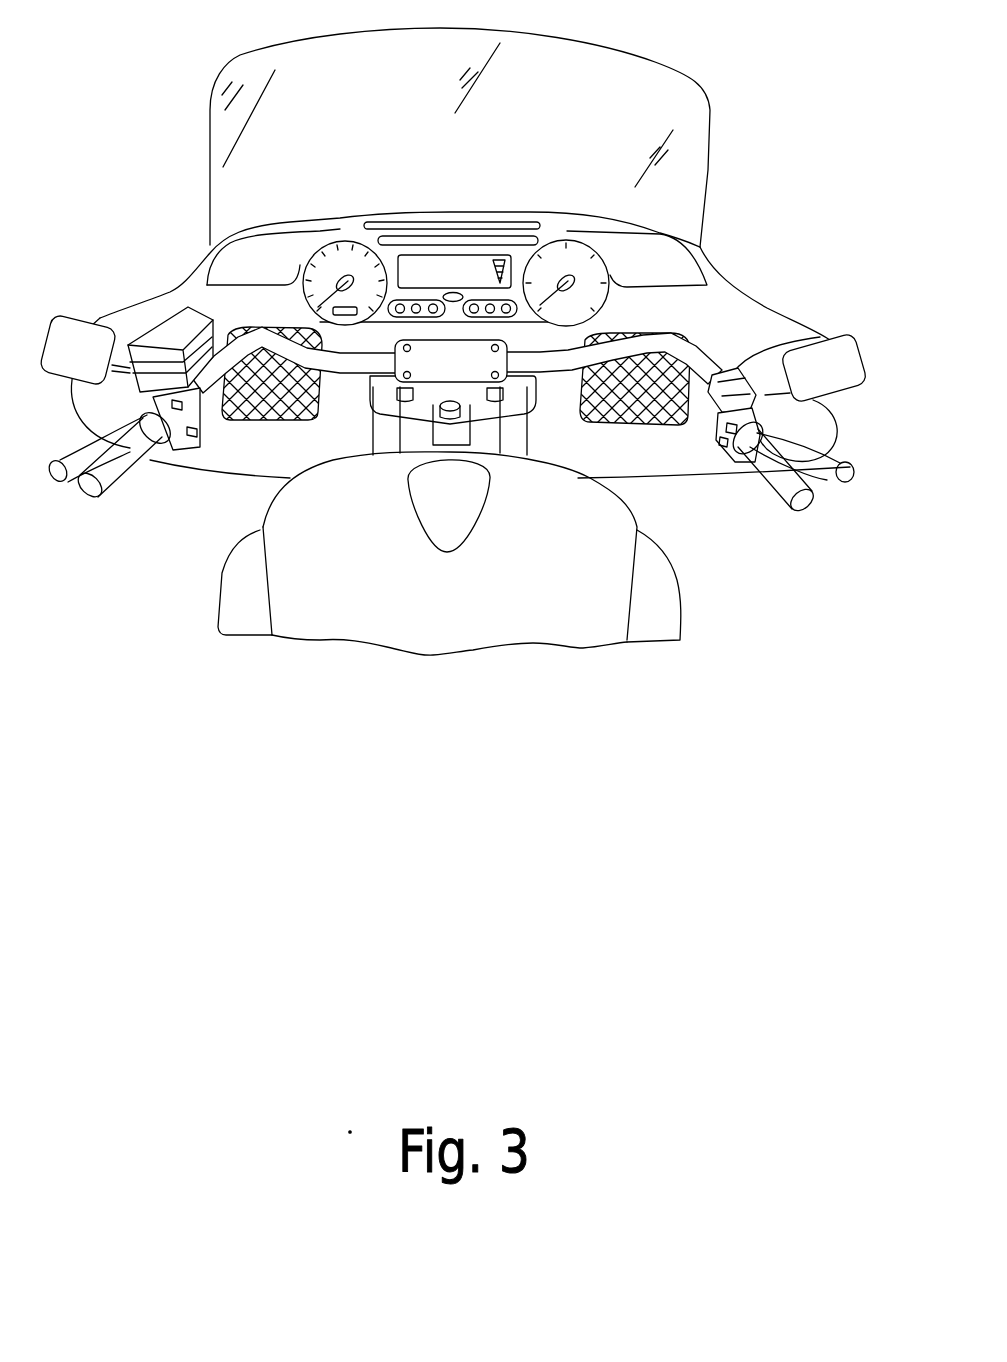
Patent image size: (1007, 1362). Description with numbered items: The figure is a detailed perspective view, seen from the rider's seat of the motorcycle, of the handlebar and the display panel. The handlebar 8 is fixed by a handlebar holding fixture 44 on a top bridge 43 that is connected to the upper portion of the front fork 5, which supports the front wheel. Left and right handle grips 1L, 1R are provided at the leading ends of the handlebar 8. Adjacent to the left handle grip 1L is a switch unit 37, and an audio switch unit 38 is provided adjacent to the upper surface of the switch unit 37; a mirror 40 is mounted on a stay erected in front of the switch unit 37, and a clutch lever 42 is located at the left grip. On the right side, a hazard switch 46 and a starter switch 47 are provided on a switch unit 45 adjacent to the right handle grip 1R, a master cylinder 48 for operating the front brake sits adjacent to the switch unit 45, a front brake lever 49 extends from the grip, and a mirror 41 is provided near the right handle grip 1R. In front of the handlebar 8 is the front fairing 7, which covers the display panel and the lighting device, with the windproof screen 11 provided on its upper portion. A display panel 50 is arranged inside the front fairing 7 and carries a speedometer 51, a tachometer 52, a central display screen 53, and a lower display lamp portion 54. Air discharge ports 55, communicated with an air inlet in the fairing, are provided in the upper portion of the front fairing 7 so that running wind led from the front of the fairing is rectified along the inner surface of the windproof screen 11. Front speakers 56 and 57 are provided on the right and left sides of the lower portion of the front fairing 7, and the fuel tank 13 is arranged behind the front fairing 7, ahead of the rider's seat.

The windproof screen 11 is at (682, 94).
The front fairing 7 is at (735, 300).
The fuel tank 13 is at (320, 627).
The front speaker 56 is at (257, 423).
The front speaker 57 is at (620, 413).
The handlebar 8 is at (552, 367).
The top bridge 43 is at (482, 413).
The front fork 5 is at (373, 428).
The handlebar holding fixture 44 is at (440, 370).
The display panel 50 is at (353, 228).
The speedometer 51 is at (303, 290).
The tachometer 52 is at (605, 300).
The central display screen 53 is at (418, 267).
The air discharge ports 55 is at (453, 222).
The lower display lamp portion 54 is at (423, 300).
The mirror 40 is at (72, 323).
The audio switch unit 38 is at (153, 340).
The switch unit 37 is at (187, 450).
The left handle grip 1L is at (127, 476).
The clutch lever 42 is at (60, 482).
The mirror 41 is at (866, 352).
The master cylinder 48 is at (813, 330).
The switch unit 45 is at (743, 477).
The starter switch 47 is at (717, 470).
The hazard switch 46 is at (707, 433).
The right handle grip 1R is at (783, 490).
The front brake lever 49 is at (840, 487).